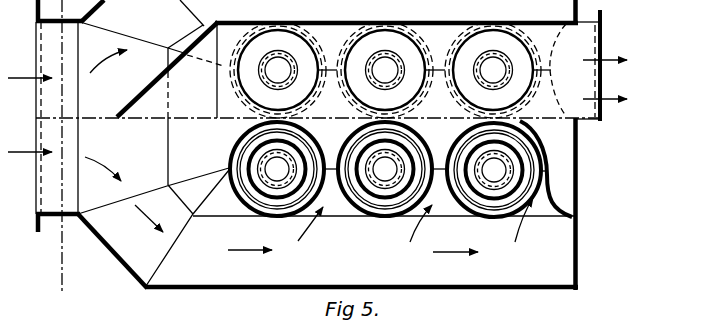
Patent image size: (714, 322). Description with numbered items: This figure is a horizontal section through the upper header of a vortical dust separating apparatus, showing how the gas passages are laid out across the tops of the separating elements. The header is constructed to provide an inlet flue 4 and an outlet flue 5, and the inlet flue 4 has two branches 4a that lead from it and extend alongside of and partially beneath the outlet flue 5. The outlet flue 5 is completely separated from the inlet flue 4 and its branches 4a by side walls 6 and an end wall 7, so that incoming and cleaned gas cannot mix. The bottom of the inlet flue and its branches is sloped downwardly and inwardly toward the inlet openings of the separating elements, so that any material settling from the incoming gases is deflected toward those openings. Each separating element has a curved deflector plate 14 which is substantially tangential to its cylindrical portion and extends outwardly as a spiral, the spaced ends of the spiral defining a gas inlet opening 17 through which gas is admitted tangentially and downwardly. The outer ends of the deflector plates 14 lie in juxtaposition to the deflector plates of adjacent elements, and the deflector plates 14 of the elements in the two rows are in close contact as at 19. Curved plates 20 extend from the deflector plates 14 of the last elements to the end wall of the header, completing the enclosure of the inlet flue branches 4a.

The inlet flue 4 is at (53, 287).
The inlet flue branches 4a is at (361, 242).
The outlet flue 5 is at (580, 145).
The side walls 6 is at (443, 20).
The end wall 7 is at (161, 74).
The curved deflector plate 14 is at (365, 168).
The gas inlet opening 17 is at (436, 212).
The point of close contact 19 is at (263, 120).
The curved plates 20 is at (557, 188).